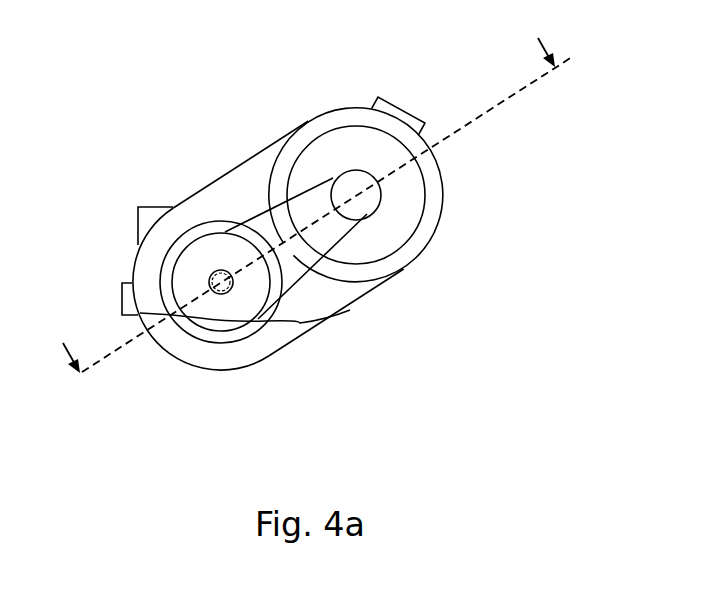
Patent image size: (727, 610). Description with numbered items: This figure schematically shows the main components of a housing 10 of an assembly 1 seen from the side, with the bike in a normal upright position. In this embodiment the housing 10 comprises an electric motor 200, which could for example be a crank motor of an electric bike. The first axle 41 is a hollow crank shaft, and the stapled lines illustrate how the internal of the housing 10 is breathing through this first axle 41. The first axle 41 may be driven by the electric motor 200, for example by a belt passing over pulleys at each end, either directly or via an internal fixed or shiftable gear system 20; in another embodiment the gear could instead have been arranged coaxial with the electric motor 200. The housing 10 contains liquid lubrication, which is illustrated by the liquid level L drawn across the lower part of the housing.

The drive assembly 1 is at (277, 122).
The housing 10 is at (213, 180).
The gear system 20 is at (162, 275).
The electric motor 200 is at (410, 150).
The first axle 41 is at (210, 289).
The liquid level L is at (350, 310).